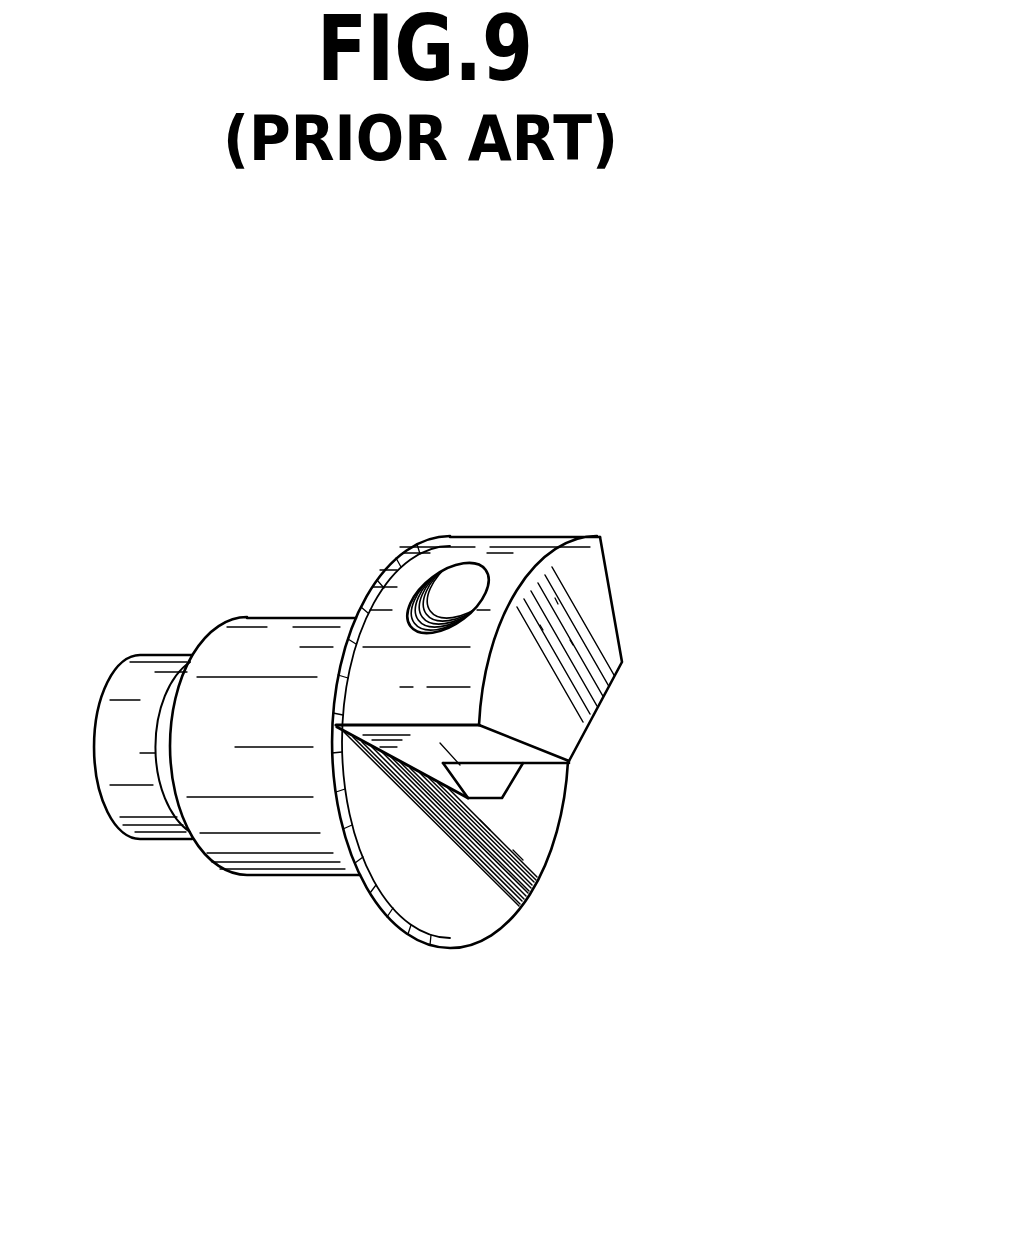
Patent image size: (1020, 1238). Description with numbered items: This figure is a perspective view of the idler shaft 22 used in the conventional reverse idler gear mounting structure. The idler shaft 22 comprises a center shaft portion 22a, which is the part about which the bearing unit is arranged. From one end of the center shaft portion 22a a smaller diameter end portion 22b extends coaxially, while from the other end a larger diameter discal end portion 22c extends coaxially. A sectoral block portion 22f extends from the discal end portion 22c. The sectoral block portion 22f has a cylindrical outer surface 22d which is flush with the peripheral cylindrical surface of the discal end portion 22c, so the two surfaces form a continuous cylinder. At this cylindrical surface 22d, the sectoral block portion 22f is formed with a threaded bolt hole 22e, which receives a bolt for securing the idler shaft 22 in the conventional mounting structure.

The idler shaft 22 is at (468, 753).
The center shaft portion 22a is at (283, 653).
The smaller diameter end portion 22b is at (152, 680).
The larger diameter discal end portion 22c is at (463, 920).
The cylindrical outer surface 22d is at (508, 553).
The threaded bolt hole 22e is at (470, 590).
The sectoral block portion 22f is at (581, 605).